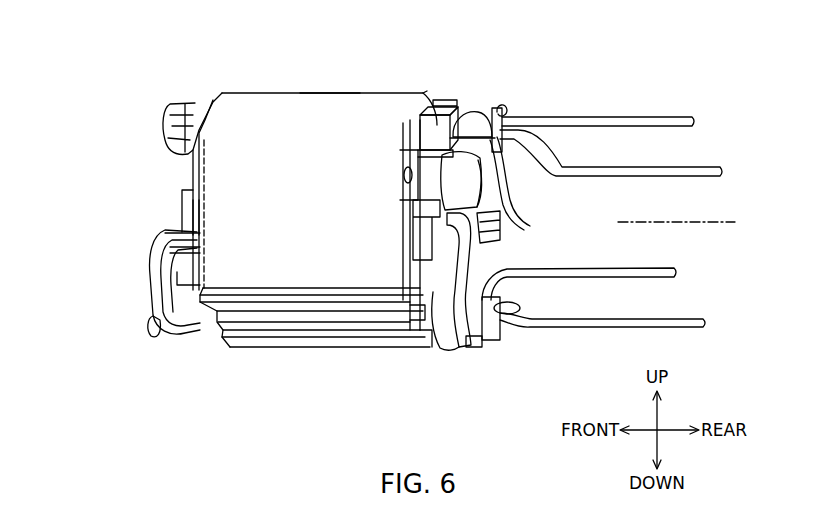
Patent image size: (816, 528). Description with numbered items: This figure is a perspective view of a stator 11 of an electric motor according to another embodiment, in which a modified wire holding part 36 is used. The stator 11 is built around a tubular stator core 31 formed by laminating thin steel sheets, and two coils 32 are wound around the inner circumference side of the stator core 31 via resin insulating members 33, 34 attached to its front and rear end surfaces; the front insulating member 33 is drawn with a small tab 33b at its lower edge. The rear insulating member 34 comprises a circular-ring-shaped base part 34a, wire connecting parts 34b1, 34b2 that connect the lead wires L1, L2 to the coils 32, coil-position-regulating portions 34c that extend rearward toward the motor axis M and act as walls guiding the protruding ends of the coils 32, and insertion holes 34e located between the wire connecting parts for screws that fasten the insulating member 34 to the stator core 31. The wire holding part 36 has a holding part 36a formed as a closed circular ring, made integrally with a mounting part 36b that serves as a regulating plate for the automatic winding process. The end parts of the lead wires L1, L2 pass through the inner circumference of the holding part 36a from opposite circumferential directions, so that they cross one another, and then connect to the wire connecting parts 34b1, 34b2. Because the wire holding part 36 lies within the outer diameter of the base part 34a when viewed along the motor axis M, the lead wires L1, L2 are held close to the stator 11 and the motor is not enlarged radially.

The stator 11 is at (405, 72).
The stator core 31 is at (262, 118).
The coil 32 is at (166, 124).
The insulating member 33 is at (188, 187).
The tab of insulator 33b is at (152, 327).
The insulating member 34 is at (405, 135).
The base part 34a is at (331, 100).
The wire connecting part 34b1 is at (503, 235).
The wire connecting part 34b2 is at (433, 133).
The coil-position-regulating portion 34c is at (463, 188).
The insertion hole 34e is at (403, 176).
The wire holding part 36 is at (518, 107).
The holding part 36a is at (518, 132).
The mounting part 36b is at (500, 105).
The lead wire L1 is at (638, 117).
The lead wire L2 is at (495, 110).
The motor axis M is at (683, 222).